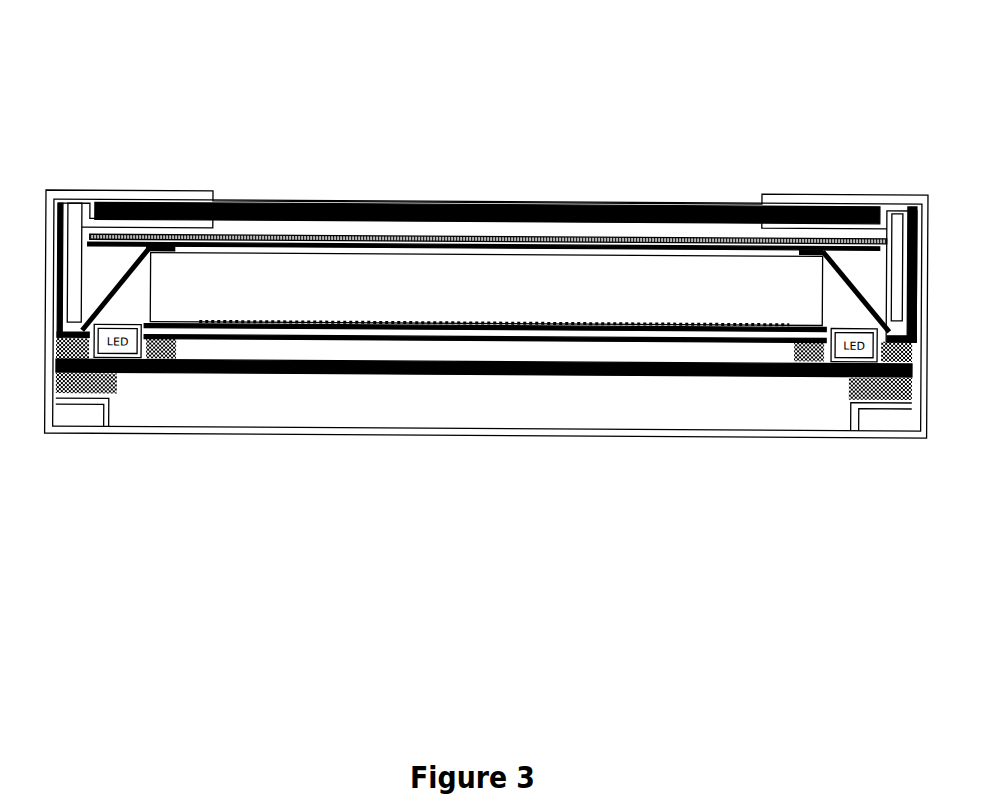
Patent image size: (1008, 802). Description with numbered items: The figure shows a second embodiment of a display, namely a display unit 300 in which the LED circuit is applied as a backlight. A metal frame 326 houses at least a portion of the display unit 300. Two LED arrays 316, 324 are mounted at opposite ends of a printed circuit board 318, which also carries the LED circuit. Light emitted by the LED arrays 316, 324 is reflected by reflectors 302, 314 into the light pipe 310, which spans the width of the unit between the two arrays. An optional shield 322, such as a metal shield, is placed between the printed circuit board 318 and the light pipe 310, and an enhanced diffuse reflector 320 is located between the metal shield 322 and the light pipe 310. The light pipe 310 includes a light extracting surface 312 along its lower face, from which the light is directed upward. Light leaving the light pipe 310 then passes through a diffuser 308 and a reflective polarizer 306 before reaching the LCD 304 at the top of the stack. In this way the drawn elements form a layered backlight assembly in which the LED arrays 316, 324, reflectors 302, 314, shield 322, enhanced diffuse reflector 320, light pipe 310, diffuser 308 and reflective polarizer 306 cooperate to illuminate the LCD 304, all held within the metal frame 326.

The display unit 300 is at (563, 79).
The reflector 302 is at (137, 262).
The LCD 304 is at (238, 205).
The reflective polarizer 306 is at (322, 235).
The diffuser 308 is at (365, 243).
The light pipe 310 is at (633, 257).
The light extracting surface 312 is at (703, 323).
The reflector 314 is at (848, 210).
The LED array 316 is at (140, 375).
The printed circuit board 318 is at (408, 377).
The enhanced diffuse reflector 320 is at (597, 332).
The shield 322 is at (693, 342).
The LED array 324 is at (830, 378).
The metal frame 326 is at (883, 435).